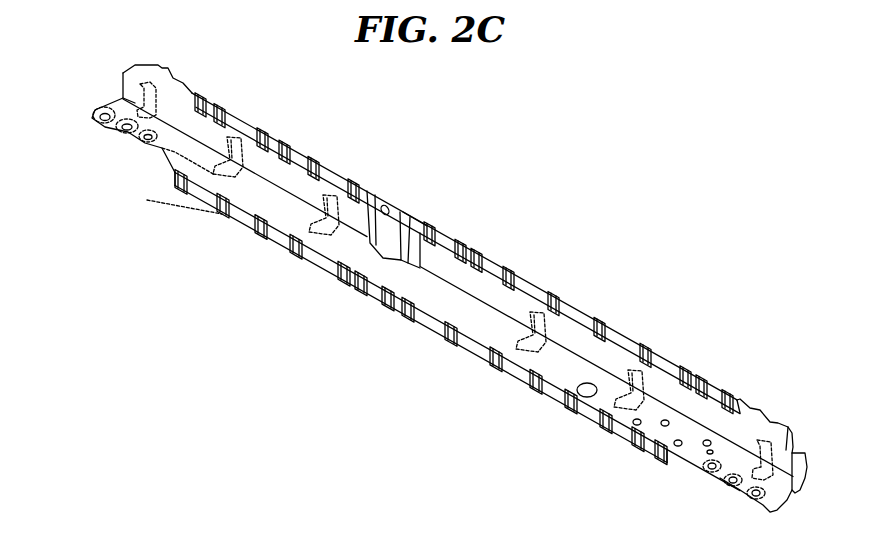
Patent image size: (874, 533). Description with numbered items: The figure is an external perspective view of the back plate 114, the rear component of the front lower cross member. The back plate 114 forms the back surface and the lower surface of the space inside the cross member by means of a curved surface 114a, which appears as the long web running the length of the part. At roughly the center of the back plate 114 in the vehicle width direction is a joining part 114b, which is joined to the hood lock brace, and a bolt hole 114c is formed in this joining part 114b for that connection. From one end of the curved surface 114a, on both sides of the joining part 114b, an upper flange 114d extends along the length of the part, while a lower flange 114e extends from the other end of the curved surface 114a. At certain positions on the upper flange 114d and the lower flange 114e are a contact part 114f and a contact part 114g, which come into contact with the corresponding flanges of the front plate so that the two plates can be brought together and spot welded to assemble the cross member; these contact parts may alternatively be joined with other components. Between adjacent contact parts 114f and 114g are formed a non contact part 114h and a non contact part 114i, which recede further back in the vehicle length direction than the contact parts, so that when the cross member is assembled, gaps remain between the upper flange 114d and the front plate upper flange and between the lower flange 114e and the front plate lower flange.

The back plate 114 is at (640, 178).
The curved surface 114a is at (437, 297).
The joining part 114b is at (391, 230).
The bolt hole 114c is at (382, 190).
The upper flange 114d is at (380, 149).
The lower flange 114e is at (655, 491).
The contact part 114f is at (118, 129).
The contact part 114g is at (215, 201).
The non contact part 114h is at (215, 150).
The non contact part 114i is at (222, 214).